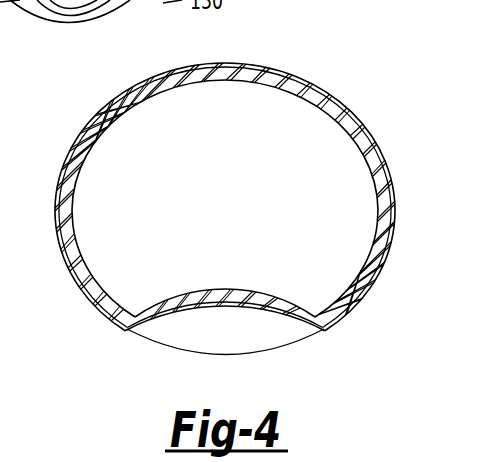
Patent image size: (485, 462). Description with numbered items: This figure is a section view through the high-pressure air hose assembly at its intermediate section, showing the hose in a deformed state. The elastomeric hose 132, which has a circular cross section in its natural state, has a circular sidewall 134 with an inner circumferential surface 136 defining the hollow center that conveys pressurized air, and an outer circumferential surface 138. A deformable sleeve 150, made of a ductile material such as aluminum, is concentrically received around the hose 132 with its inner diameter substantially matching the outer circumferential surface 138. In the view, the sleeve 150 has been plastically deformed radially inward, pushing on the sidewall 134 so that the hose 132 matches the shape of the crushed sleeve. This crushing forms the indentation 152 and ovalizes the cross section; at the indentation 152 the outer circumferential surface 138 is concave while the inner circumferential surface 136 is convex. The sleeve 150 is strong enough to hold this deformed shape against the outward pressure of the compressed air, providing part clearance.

The elastomeric hose 132 is at (93, 290).
The circular sidewall 134 is at (324, 110).
The inner circumferential surface 136 is at (219, 308).
The outer circumferential surface 138 is at (205, 303).
The deformable sleeve 150 is at (213, 172).
The indentation 152 is at (267, 322).